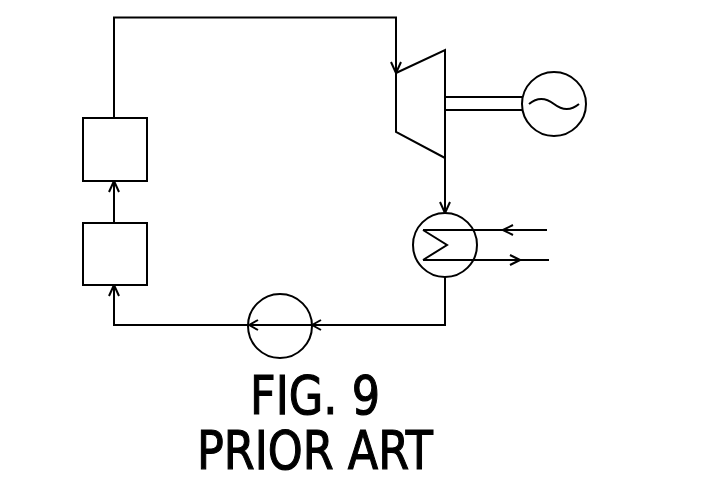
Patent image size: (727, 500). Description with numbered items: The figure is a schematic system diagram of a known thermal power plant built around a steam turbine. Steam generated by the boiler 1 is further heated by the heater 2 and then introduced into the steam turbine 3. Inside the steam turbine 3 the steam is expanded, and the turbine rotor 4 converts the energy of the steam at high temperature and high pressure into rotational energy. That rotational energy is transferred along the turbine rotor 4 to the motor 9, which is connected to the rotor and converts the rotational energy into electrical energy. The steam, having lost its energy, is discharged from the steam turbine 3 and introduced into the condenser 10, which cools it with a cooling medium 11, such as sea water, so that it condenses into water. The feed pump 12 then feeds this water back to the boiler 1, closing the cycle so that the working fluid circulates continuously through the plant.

The boiler 1 is at (83, 256).
The heater 2 is at (83, 151).
The steam turbine 3 is at (396, 107).
The turbine rotor 4 is at (490, 97).
The motor 9 is at (586, 104).
The condenser 10 is at (413, 245).
The cooling medium 11 is at (527, 230).
The feed pump 12 is at (261, 301).